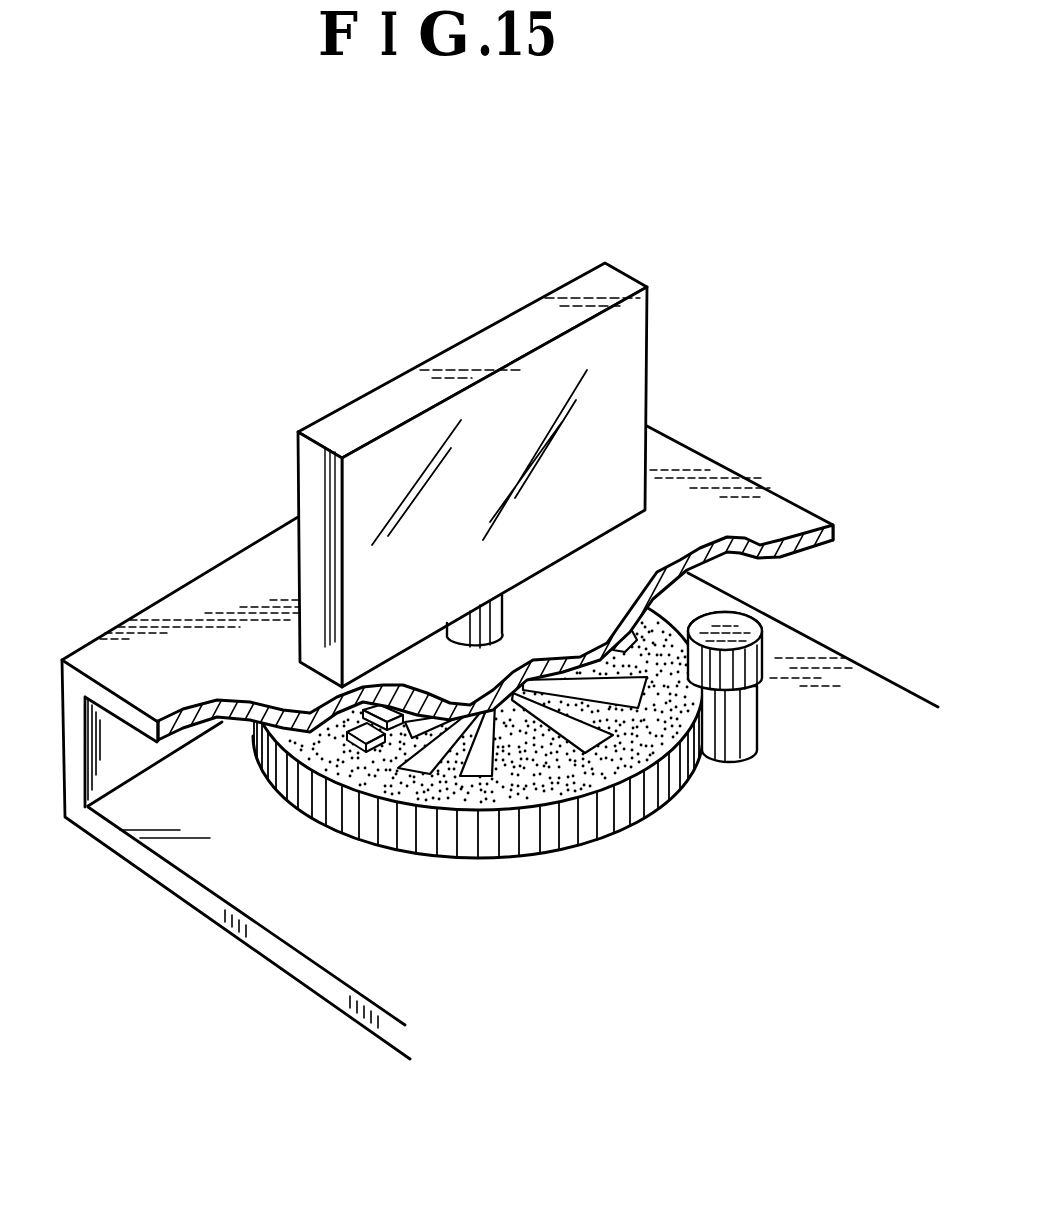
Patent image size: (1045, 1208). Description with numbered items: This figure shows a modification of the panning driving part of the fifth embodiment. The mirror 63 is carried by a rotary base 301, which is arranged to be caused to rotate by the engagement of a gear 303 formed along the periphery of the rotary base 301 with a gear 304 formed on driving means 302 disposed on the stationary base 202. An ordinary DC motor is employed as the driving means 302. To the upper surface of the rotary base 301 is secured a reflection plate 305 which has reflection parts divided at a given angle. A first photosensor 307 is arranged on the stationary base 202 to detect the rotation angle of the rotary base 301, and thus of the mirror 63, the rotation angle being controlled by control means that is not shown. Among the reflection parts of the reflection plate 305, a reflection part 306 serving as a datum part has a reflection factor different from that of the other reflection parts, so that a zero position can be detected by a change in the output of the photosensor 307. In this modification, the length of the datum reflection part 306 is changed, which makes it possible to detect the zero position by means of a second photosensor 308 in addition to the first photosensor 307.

The mirror 63 is at (622, 393).
The stationary base 202 is at (458, 573).
The rotary base 301 is at (432, 790).
The driving means 302 is at (747, 723).
The gear 303 is at (627, 810).
The gear 304 is at (743, 620).
The reflection plate 305 is at (477, 772).
The reflection part 306 is at (557, 783).
The first photosensor 307 is at (403, 747).
The second photosensor 308 is at (360, 725).